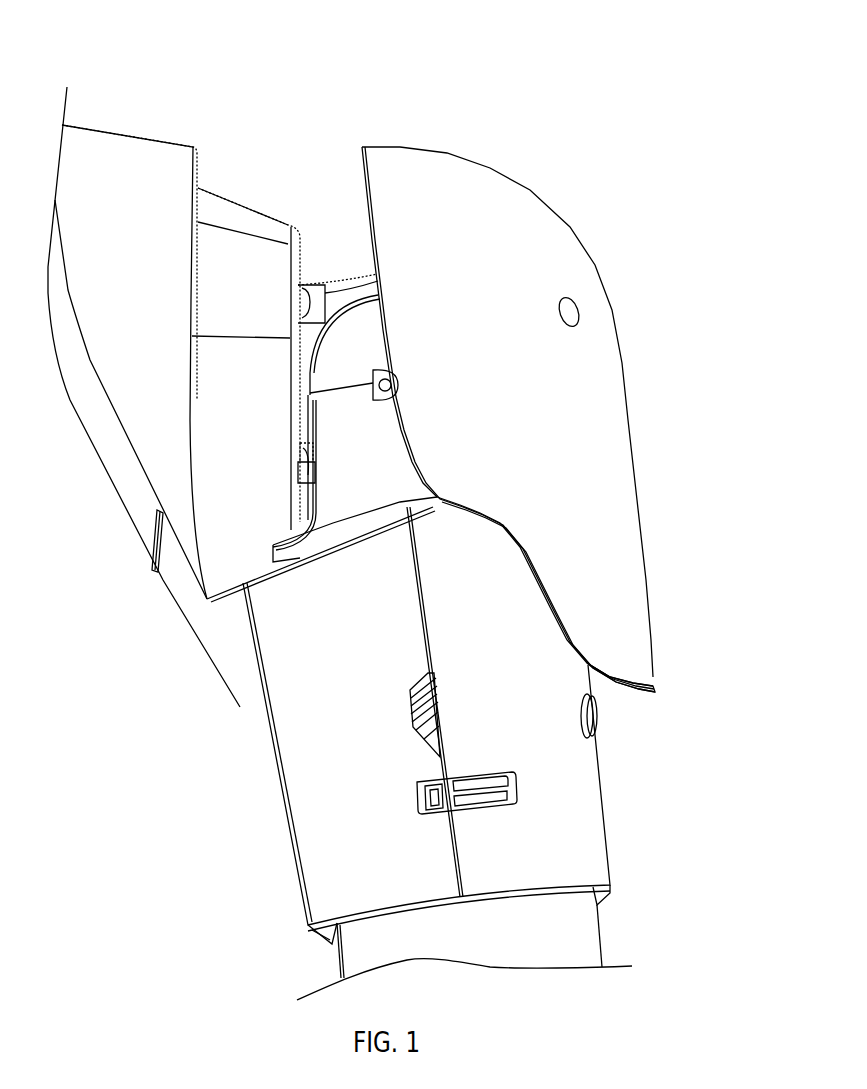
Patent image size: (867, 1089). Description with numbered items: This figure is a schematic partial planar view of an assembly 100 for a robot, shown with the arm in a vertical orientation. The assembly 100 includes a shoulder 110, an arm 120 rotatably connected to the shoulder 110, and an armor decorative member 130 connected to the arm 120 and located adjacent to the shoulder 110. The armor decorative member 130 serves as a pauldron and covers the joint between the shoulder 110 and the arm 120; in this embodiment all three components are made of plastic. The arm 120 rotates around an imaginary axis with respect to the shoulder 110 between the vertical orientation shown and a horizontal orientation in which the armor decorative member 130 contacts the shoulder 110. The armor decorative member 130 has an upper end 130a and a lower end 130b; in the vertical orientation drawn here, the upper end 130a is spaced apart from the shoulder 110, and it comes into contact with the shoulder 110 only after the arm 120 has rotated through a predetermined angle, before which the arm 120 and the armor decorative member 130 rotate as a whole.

The assembly 100 is at (93, 748).
The shoulder 110 is at (143, 162).
The arm 120 is at (583, 807).
The armor decorative member 130 is at (523, 227).
The upper end 130a is at (366, 147).
The lower end 130b is at (656, 675).